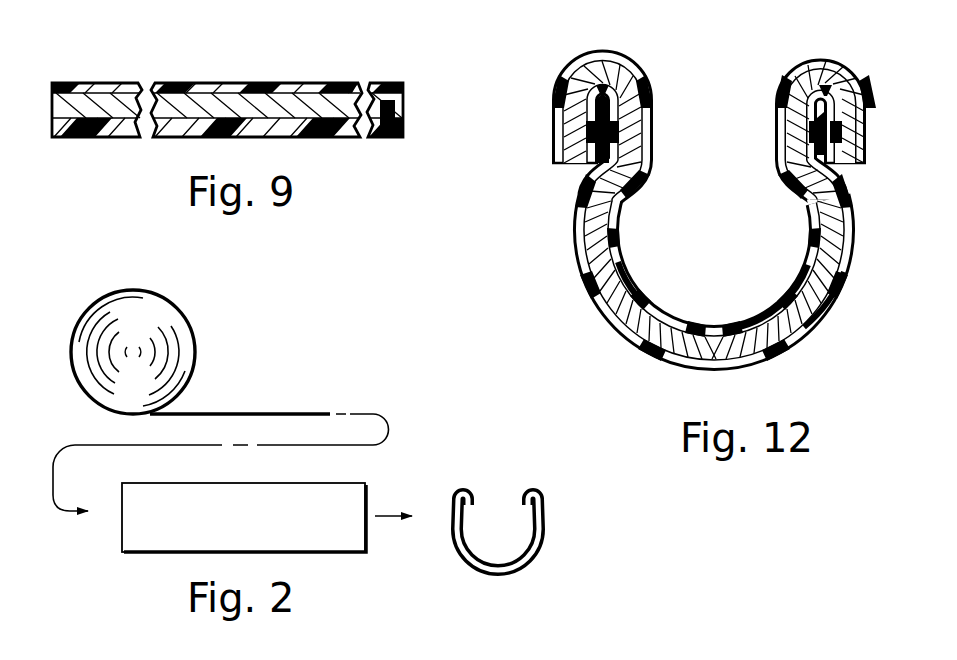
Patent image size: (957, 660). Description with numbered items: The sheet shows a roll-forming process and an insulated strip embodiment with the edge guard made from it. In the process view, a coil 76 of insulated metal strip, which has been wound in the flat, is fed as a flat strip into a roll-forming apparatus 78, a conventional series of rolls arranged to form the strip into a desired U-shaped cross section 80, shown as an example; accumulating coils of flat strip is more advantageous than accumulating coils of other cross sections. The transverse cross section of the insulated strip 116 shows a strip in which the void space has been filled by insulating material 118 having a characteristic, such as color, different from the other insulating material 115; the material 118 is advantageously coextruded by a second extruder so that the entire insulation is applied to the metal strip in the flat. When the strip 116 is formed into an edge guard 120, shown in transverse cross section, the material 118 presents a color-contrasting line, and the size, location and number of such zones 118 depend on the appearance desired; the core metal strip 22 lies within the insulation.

In FIG. 9, the core layer 22 is at (222, 103).
In FIG. 2, the coil 76 is at (190, 328).
In FIG. 2, the roll-forming apparatus 78 is at (340, 483).
In FIG. 2, the U-shaped cross section 80 is at (546, 533).
In FIG. 9, the insulating material 115 is at (403, 112).
In FIG. 9, the insulated strip 116 is at (255, 85).
In FIG. 9, the insulating material 118 is at (318, 87).
In FIG. 12, the insulating material 118 is at (578, 236).
In FIG. 12, the edge guard 120 is at (689, 215).